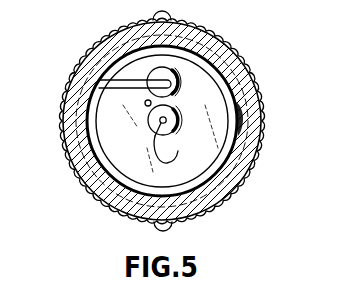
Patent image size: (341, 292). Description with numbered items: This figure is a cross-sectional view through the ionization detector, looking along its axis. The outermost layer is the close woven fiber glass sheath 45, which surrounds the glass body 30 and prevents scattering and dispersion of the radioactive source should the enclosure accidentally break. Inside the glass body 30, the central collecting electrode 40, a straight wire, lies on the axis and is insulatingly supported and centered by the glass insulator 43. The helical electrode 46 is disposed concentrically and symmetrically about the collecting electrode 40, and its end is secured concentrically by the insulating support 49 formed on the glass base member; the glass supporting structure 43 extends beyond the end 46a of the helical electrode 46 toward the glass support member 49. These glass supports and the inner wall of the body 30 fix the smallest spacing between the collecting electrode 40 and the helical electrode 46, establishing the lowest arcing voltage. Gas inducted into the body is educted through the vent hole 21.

The vent hole 21 is at (145, 104).
The body 30 is at (241, 75).
The central collecting electrode 40 is at (155, 136).
The glass insulator 43 is at (178, 151).
The close woven fiber glass sheath 45 is at (112, 33).
The helical electrode 46 is at (266, 140).
The end of helical electrode 46a is at (113, 63).
The insulating support 49 is at (178, 91).